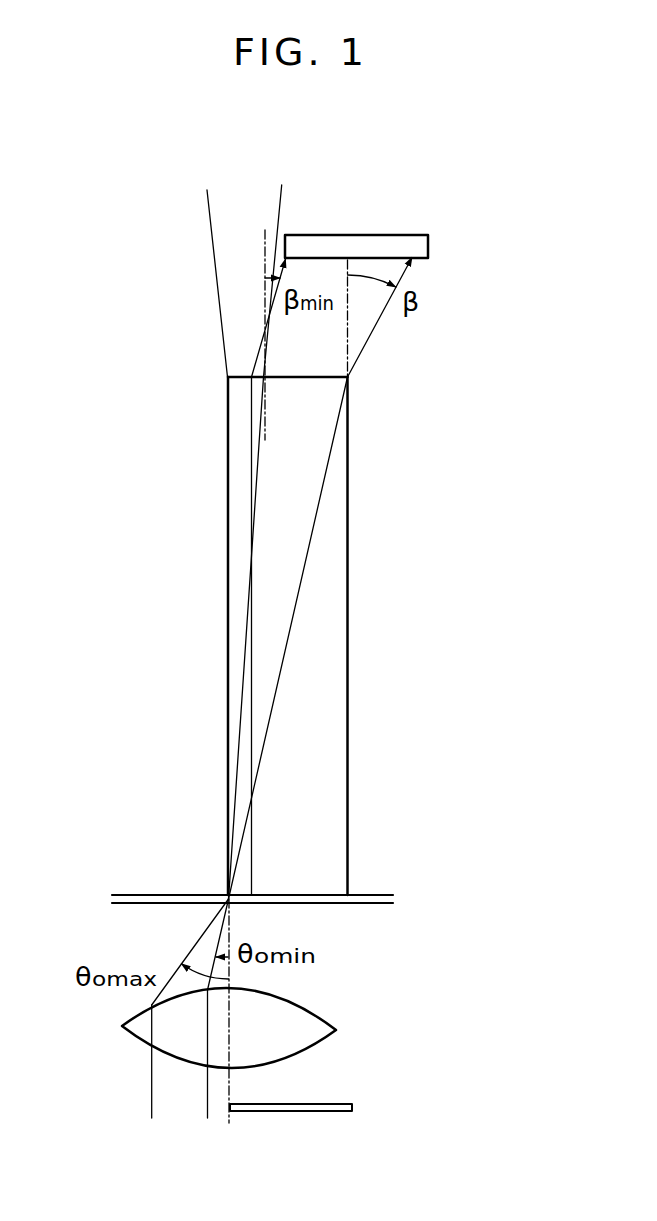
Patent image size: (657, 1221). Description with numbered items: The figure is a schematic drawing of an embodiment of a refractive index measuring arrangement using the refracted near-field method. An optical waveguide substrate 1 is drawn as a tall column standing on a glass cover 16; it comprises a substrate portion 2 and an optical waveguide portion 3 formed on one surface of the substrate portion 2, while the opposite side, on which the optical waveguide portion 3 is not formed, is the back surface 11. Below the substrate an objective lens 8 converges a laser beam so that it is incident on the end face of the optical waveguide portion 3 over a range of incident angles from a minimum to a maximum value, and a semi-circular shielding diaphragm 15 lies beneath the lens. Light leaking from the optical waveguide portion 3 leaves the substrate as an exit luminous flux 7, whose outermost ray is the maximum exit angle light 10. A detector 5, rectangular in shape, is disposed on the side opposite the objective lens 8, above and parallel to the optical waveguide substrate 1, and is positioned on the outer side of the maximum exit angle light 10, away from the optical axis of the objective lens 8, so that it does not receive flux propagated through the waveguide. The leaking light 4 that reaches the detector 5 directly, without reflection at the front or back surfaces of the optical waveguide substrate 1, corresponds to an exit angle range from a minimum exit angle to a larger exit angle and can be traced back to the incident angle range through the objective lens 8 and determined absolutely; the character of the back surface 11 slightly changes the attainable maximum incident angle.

The optical waveguide substrate 1 is at (350, 832).
The substrate portion 2 is at (288, 636).
The optical waveguide portion 3 is at (235, 575).
The leaking light 4 is at (316, 453).
The detector 5 is at (428, 243).
The exit luminous flux 7 is at (230, 242).
The objective lens 8 is at (312, 1021).
The maximum exit angle light 10 is at (283, 198).
The back surface 11 is at (346, 622).
The semi-circular shielding diaphragm 15 is at (355, 1113).
The glass cover 16 is at (368, 905).